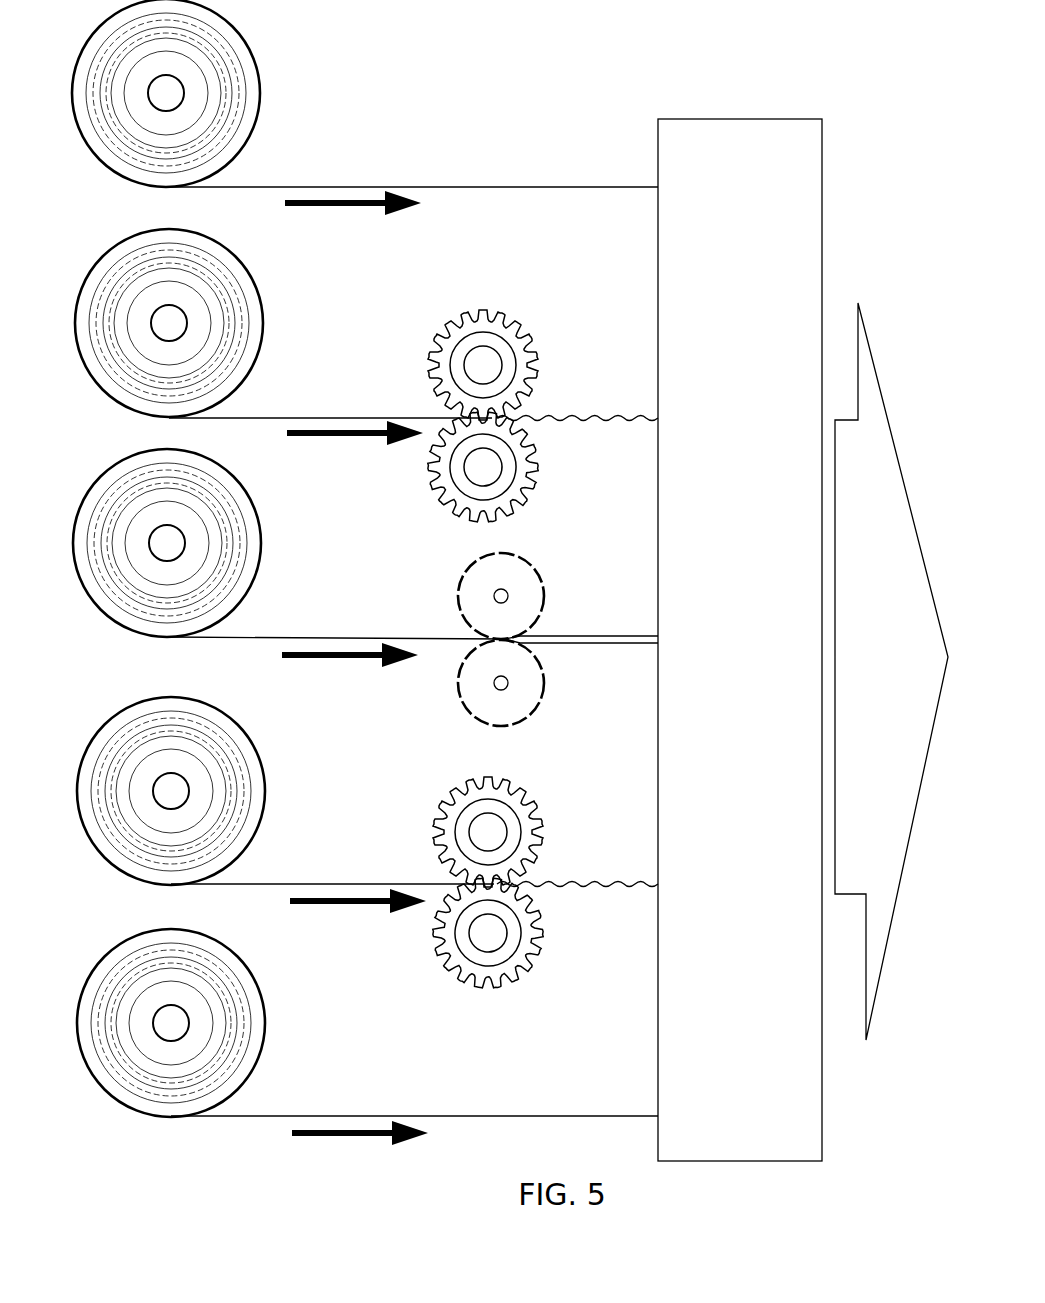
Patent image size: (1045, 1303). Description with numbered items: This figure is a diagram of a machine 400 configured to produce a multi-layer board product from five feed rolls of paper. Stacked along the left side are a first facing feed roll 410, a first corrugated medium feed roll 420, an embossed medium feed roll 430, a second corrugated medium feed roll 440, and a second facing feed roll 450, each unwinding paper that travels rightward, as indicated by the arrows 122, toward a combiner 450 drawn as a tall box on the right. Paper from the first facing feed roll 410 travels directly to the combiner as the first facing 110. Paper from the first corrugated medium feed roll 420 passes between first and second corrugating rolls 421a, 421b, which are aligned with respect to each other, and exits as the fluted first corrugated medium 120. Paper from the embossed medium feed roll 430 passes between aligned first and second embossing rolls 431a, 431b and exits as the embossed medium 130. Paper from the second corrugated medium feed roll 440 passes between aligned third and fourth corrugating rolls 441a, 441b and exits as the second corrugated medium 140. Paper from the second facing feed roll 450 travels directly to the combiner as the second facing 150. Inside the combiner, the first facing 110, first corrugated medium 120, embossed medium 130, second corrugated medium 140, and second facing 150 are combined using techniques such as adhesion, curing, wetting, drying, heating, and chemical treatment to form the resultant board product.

The machine 400 is at (533, 97).
The first facing feed roll 410 is at (82, 143).
The first facing 110 is at (566, 190).
The machine direction arrow 122 is at (316, 209).
The first corrugated medium feed roll 420 is at (88, 380).
The first corrugating roll 421a is at (532, 340).
The second corrugating roll 421b is at (432, 479).
The first corrugated medium 120 is at (598, 425).
The embossed medium feed roll 430 is at (84, 593).
The first embossing roll 431a is at (546, 606).
The second embossing roll 431b is at (456, 695).
The embossed medium 130 is at (595, 648).
The second corrugated medium feed roll 440 is at (90, 843).
The third corrugating roll 441a is at (537, 806).
The fourth corrugating roll 441b is at (437, 944).
The second corrugated medium 140 is at (598, 890).
The second facing feed roll / combiner 450 is at (92, 1091).
The second facing 150 is at (605, 1113).